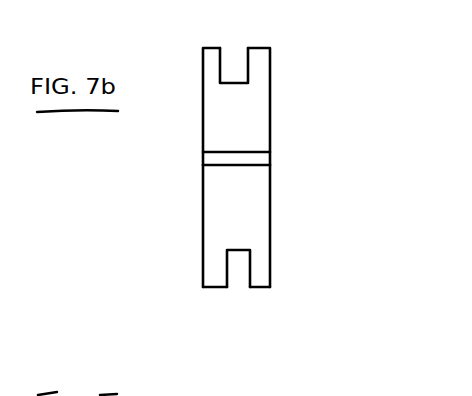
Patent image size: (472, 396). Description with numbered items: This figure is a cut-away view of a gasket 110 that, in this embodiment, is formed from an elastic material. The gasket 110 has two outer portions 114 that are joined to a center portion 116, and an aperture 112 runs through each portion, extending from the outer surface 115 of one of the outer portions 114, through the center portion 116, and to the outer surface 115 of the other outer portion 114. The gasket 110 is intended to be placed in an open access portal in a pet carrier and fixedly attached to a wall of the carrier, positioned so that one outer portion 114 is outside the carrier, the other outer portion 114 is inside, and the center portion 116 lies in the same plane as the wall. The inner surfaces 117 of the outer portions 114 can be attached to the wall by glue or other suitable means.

The gasket 110 is at (274, 100).
The aperture 112 is at (207, 158).
The outer portions 114 is at (222, 258).
The outer surface 115 is at (203, 216).
The center portion 116 is at (237, 241).
The inner surfaces 117 is at (250, 65).